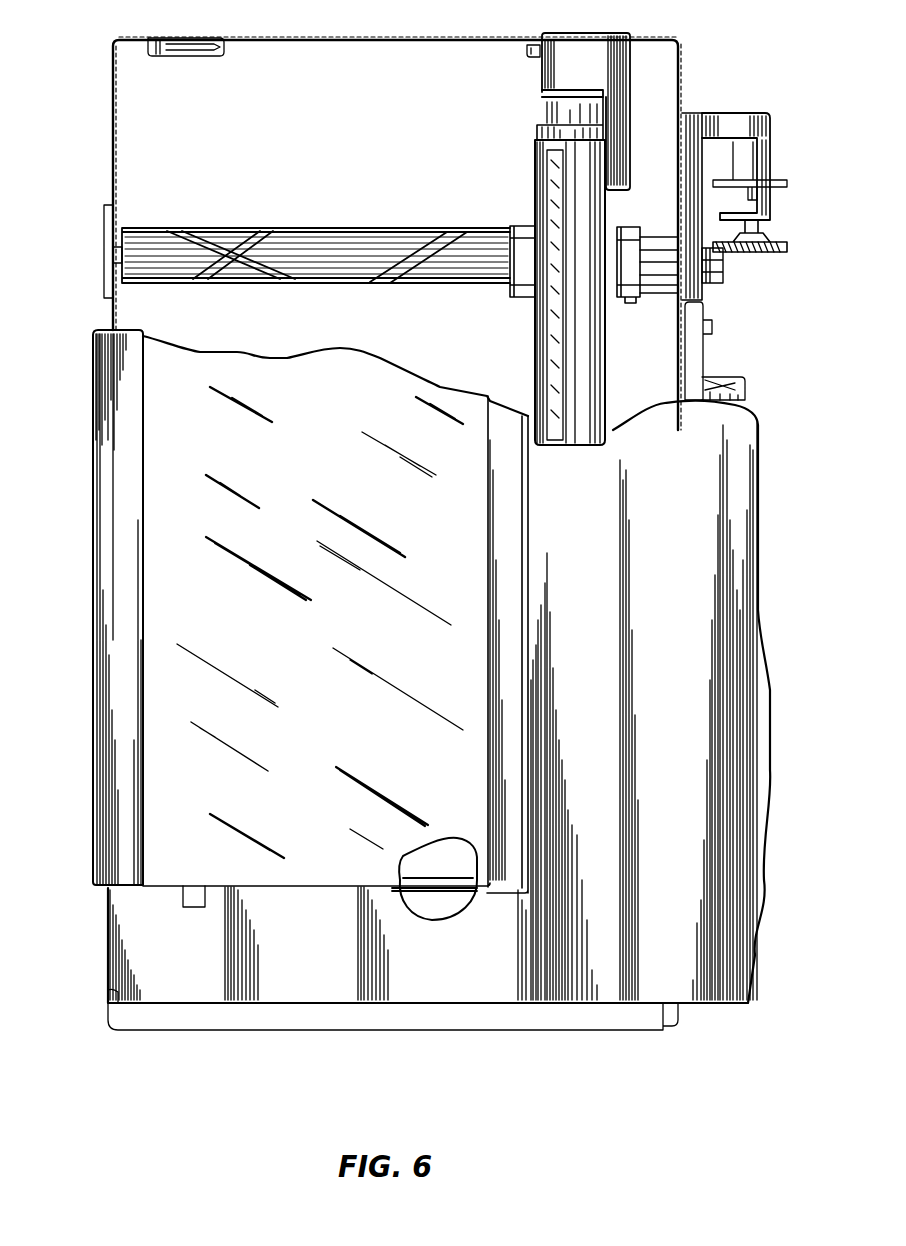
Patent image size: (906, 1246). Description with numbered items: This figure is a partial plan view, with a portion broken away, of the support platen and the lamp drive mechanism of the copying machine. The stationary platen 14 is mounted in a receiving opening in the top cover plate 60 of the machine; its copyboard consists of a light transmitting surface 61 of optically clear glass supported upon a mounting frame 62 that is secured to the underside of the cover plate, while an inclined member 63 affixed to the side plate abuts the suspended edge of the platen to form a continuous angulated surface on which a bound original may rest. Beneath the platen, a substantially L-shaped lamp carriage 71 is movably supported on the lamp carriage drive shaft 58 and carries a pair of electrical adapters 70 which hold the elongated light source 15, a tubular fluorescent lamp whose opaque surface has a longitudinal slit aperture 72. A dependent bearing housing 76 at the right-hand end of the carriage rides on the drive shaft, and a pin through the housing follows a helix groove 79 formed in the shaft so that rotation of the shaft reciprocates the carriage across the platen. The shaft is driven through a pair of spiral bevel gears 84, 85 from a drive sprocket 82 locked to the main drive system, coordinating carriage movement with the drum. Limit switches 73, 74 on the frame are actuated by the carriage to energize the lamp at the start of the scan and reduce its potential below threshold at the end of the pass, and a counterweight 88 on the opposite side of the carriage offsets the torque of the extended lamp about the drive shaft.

The stationary platen 14 is at (80, 731).
The elongated light source 15 is at (585, 352).
The lamp carriage drive shaft 58 is at (300, 240).
The top cover plate 60 is at (742, 471).
The light transmitting surface 61 is at (470, 511).
The mounting frame 62 is at (466, 884).
The inclined member 63 is at (118, 574).
The electrical adapters 70 is at (600, 116).
The lamp carriage 71 is at (628, 207).
The slit aperture 72 is at (552, 167).
The limit switch 73 is at (200, 57).
The limit switch 74 is at (528, 57).
The bearing housing 76 is at (522, 232).
The helix groove 79 is at (410, 250).
The drive sprocket 82 is at (775, 185).
The spiral bevel gear 84 is at (720, 285).
The spiral bevel gear 85 is at (783, 253).
The counterweight 88 is at (572, 58).